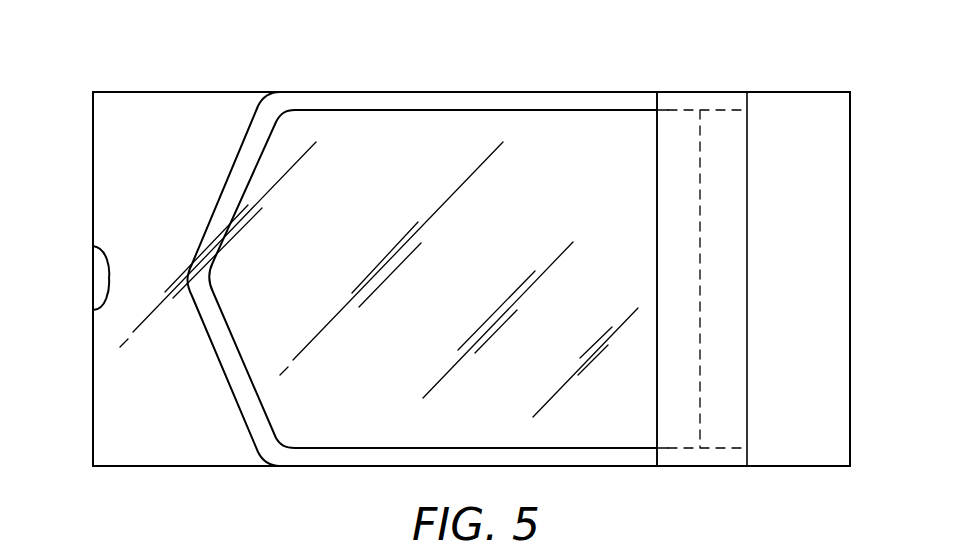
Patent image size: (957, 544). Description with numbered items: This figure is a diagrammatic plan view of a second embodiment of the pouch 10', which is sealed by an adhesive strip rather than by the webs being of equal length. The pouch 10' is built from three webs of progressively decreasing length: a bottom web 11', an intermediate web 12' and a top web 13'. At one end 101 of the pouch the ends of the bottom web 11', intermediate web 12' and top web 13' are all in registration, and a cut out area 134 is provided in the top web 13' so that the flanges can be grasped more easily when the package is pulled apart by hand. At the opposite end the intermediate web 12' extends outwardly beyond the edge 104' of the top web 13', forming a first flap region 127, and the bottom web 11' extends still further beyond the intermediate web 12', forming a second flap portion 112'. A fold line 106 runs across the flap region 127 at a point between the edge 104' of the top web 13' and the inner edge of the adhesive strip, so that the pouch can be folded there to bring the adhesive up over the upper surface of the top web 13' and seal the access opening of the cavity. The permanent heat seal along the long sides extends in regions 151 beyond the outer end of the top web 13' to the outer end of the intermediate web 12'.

The pouch 10' is at (434, 264).
The end of the pouch 101 is at (93, 200).
The cut out area 134 is at (97, 285).
The top web 13' is at (433, 246).
The edge of top web 104' is at (388, 279).
The first flap region 127 is at (670, 217).
The intermediate web 12' is at (715, 253).
The fold line 106 is at (700, 388).
The regions of permanent heat seal 151 is at (678, 110).
The bottom web 11' is at (798, 257).
The second flap portion 112' is at (787, 273).